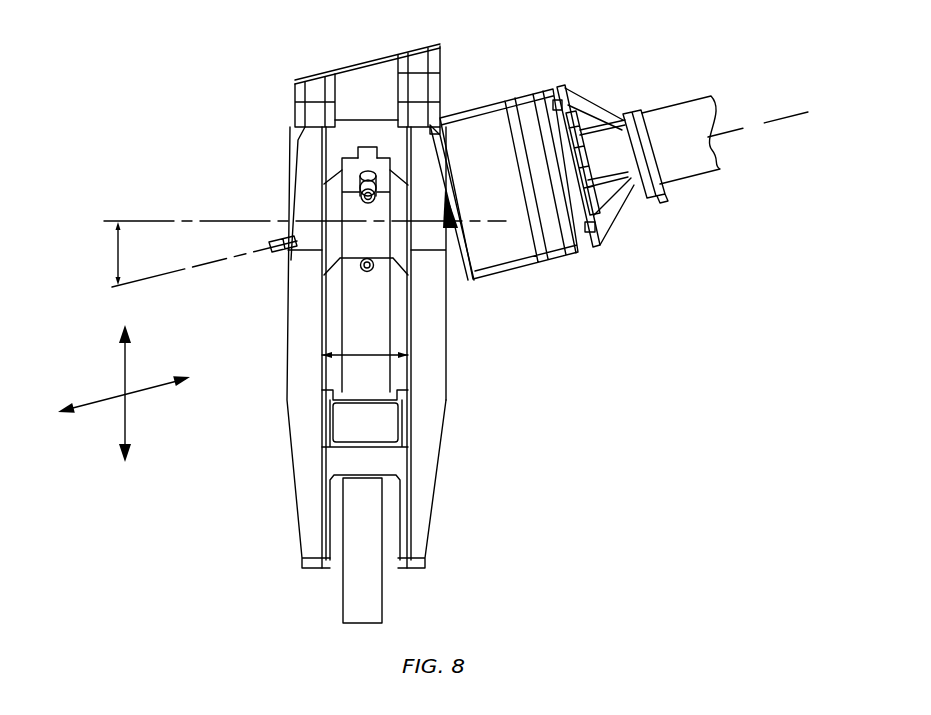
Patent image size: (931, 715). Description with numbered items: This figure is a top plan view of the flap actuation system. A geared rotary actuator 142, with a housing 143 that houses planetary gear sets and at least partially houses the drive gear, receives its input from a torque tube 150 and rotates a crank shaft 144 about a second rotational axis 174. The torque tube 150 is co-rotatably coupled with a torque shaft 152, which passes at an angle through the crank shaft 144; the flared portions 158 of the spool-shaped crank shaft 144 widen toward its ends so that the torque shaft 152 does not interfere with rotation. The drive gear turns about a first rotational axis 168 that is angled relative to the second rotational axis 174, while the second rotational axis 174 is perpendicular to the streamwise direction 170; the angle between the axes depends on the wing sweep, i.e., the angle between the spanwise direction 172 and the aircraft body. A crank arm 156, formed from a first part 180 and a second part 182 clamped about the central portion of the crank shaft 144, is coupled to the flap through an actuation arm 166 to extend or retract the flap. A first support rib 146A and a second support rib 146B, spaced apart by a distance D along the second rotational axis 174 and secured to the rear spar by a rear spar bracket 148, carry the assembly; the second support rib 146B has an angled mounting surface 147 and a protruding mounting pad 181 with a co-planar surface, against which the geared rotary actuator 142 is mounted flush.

The geared rotary actuator 142 is at (498, 282).
The housing 143 is at (550, 234).
The crank shaft 144 is at (397, 272).
The first support rib 146A is at (307, 497).
The second support rib 146B is at (417, 510).
The mounting surface 147 is at (440, 165).
The rear spar bracket 148 is at (355, 92).
The torque tube 150 is at (677, 122).
The torque shaft 152 is at (278, 238).
The crank arm 156 is at (384, 198).
The flared portions 158 is at (333, 173).
The actuation arm 166 is at (360, 610).
The first rotational axis 168 is at (230, 260).
The streamwise direction 170 is at (127, 360).
The spanwise direction 172 is at (110, 398).
The second rotational axis 174 is at (215, 220).
The first part 180 is at (358, 242).
The mounting pad 181 is at (453, 268).
The second part 182 is at (370, 147).
The distance D is at (367, 358).